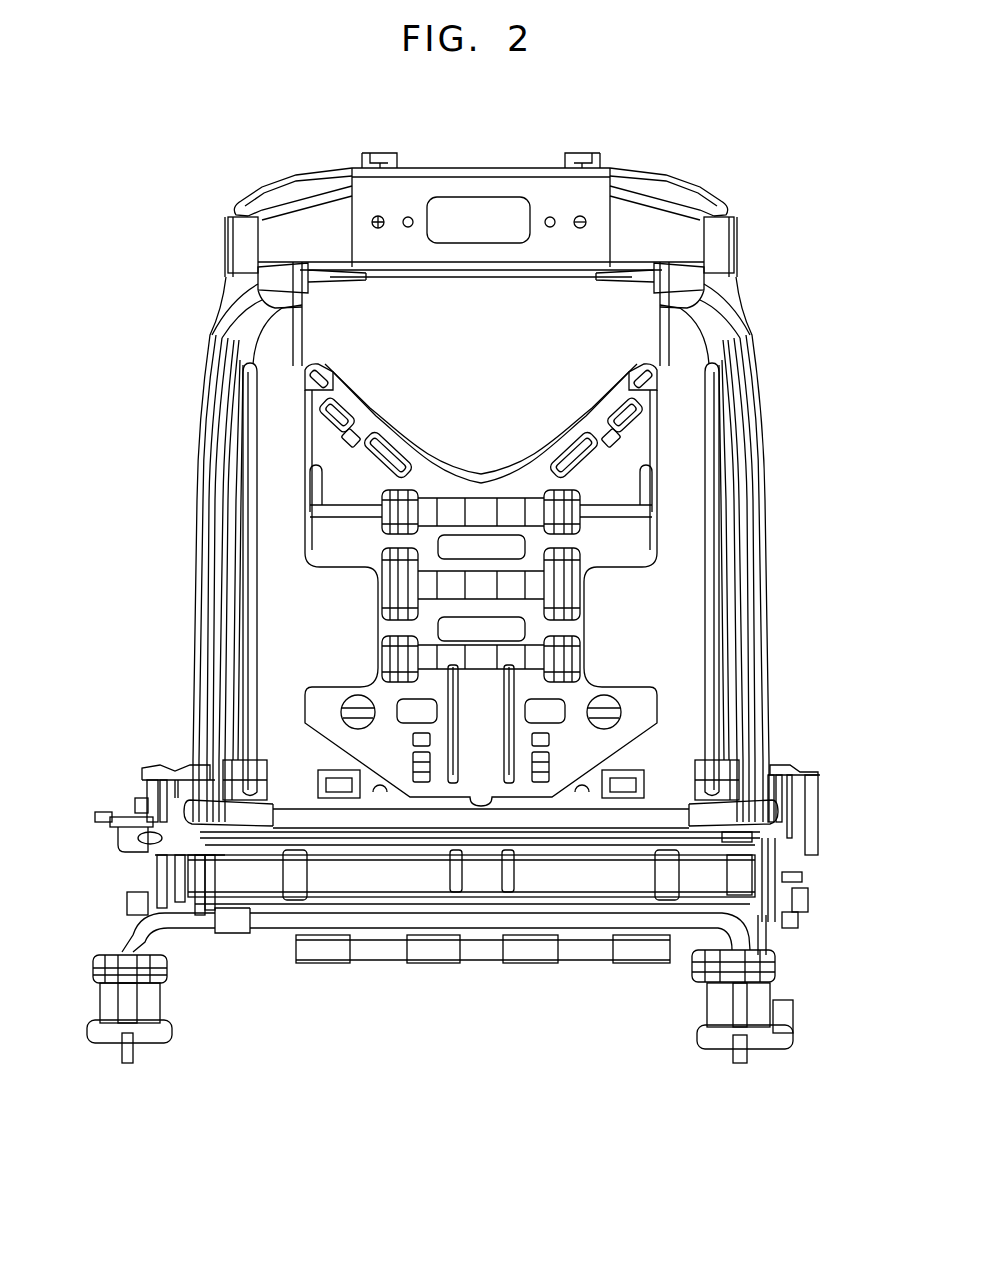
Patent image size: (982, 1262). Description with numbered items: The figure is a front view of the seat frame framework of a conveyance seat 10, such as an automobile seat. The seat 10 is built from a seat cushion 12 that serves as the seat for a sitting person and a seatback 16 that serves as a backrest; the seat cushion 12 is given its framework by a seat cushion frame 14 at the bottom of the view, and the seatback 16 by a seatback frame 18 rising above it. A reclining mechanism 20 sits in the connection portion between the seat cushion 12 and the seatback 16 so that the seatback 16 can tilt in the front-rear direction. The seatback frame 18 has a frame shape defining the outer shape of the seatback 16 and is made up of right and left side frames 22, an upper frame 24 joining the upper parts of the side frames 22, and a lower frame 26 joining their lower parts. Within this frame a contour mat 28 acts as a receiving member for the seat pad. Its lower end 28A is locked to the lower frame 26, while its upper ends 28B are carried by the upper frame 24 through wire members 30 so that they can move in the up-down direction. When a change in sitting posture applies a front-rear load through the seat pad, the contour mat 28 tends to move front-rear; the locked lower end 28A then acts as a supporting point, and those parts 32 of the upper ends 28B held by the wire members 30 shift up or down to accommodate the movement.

The conveyance seat 10 is at (206, 180).
The seat cushion 12 is at (458, 863).
The seat cushion frame 14 is at (230, 818).
The seatback 16 is at (465, 558).
The seatback frame 18 is at (196, 615).
The reclining mechanism 20 is at (745, 762).
The side frames 22 is at (245, 536).
The upper frame 24 is at (438, 186).
The lower frame 26 is at (238, 775).
The contour mat 28 is at (330, 458).
The lower end 28A is at (470, 780).
The upper ends 28B is at (620, 383).
The wire members 30 is at (250, 347).
The parts 32 is at (322, 294).